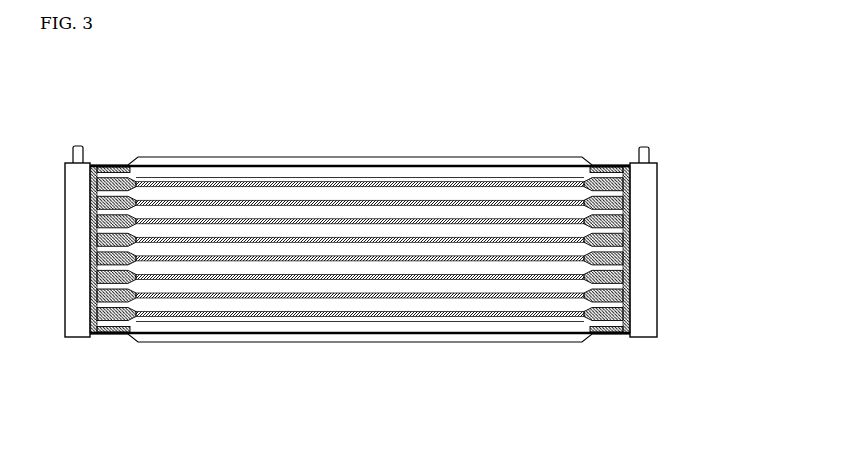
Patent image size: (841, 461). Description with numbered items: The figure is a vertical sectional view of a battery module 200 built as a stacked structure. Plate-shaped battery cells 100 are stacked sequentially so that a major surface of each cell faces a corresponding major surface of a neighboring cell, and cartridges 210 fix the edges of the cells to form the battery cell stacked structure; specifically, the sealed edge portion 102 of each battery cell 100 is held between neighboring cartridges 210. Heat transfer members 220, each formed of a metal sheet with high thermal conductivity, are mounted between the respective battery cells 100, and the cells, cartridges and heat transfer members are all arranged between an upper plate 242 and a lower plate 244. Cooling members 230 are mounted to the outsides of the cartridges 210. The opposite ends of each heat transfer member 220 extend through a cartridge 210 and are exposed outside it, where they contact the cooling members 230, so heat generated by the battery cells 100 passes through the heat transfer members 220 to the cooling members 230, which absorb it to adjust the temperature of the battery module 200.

The battery module 200 is at (70, 102).
The battery cell 100 is at (480, 212).
The sealed edge portion 102 is at (596, 172).
The cartridge 210 is at (630, 175).
The heat transfer member 220 is at (203, 225).
The cooling member 230 is at (65, 314).
The upper plate 242 is at (355, 158).
The lower plate 244 is at (433, 342).